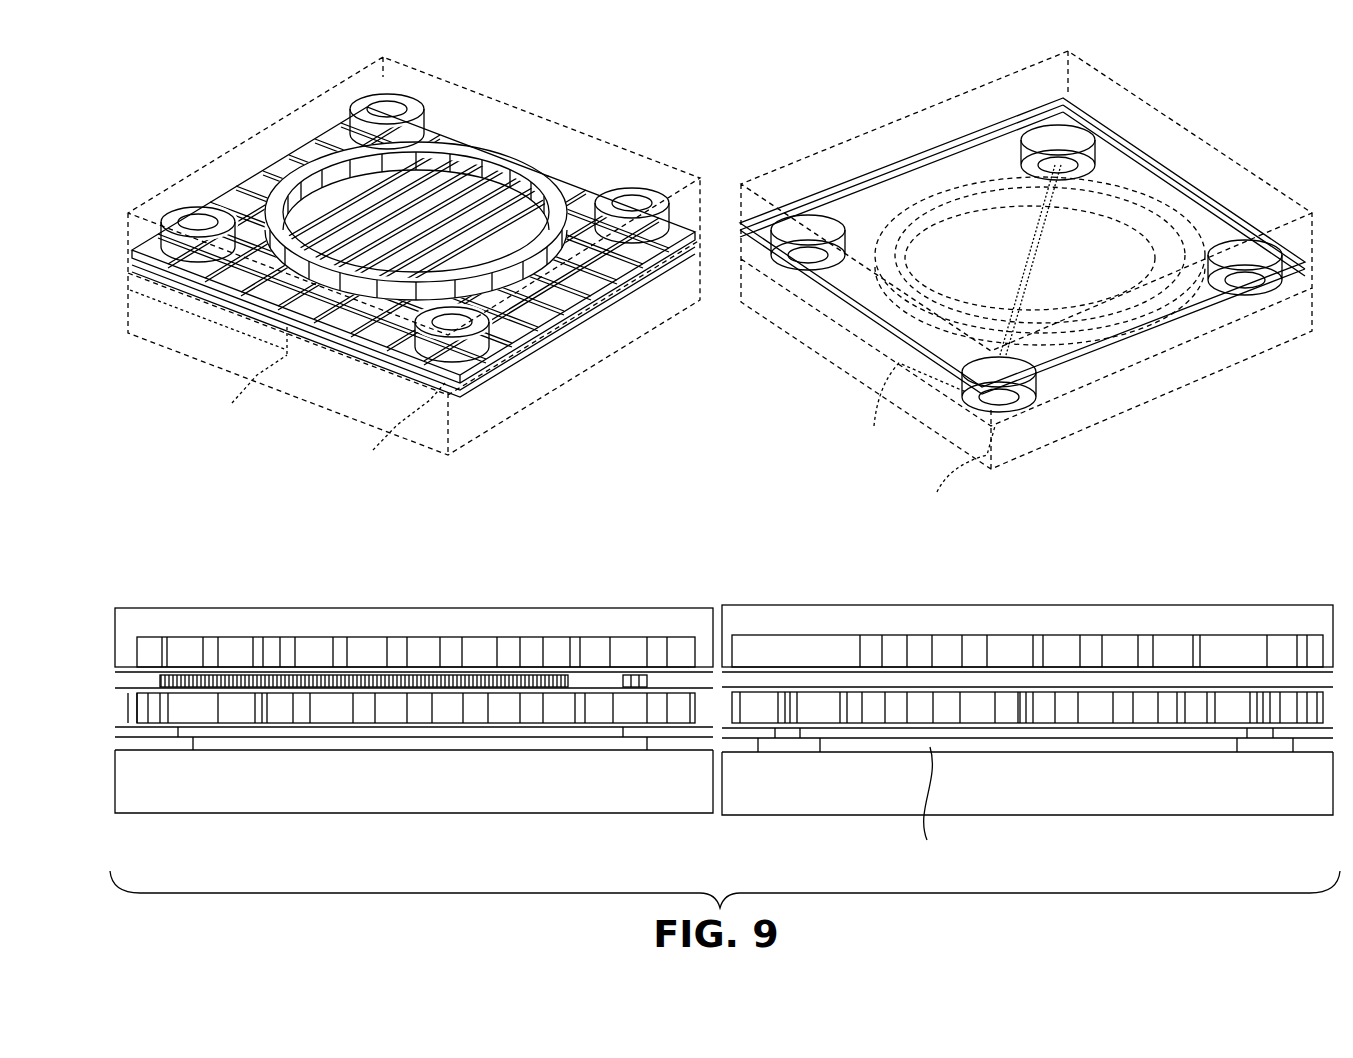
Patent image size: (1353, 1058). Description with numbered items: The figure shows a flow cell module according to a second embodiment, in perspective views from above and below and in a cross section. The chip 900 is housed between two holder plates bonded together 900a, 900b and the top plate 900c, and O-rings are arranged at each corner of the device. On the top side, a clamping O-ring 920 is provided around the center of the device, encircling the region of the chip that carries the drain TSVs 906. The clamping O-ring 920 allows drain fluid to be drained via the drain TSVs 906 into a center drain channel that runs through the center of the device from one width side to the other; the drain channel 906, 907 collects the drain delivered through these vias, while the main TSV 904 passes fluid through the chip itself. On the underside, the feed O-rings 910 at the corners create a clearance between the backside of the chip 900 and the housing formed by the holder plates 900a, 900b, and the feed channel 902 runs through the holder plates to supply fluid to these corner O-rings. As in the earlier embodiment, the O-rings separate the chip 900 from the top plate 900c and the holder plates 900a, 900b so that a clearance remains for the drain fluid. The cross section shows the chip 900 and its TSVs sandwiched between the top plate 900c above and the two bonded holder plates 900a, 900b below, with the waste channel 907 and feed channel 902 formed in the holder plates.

The clamping O-ring 920 is at (297, 162).
The drain TSVs 906 is at (253, 680).
The feed channel 902 is at (1262, 840).
The feed O-rings 910 is at (808, 216).
The chip 900 is at (113, 683).
The main TSV 904 is at (640, 683).
The drain channel 907 is at (1022, 700).
The holder plate 900a is at (724, 818).
The holder plate 900b is at (724, 722).
The top plate 900c is at (724, 636).